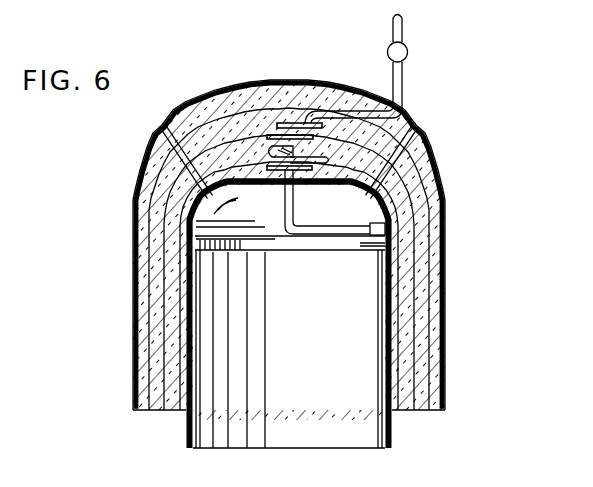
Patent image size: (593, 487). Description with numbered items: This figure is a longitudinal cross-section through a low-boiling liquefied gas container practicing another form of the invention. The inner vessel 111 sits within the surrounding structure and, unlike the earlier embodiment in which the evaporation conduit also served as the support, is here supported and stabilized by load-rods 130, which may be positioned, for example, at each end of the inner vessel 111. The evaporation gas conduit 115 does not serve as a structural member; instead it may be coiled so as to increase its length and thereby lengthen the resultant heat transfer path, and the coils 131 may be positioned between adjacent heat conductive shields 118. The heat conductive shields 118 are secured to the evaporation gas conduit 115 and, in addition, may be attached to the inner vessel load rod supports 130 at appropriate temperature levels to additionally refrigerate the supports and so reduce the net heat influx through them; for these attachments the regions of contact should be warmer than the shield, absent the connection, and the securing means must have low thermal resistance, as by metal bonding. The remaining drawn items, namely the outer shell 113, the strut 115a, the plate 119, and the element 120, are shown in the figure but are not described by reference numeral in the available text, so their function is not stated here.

The inner vessel 111 is at (380, 431).
The outer casing shell 113 is at (446, 278).
The evaporation gas conduit 115 is at (344, 225).
The strut 115a is at (168, 194).
The heat conductive shields 118 is at (420, 211).
The plate 119 is at (280, 122).
The voltmeter 120 is at (409, 56).
The load-rods 130 is at (428, 136).
The coils 131 is at (328, 158).